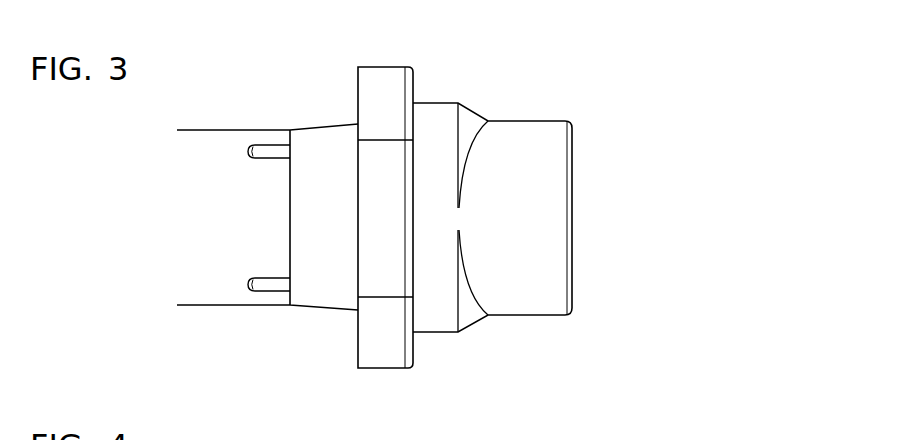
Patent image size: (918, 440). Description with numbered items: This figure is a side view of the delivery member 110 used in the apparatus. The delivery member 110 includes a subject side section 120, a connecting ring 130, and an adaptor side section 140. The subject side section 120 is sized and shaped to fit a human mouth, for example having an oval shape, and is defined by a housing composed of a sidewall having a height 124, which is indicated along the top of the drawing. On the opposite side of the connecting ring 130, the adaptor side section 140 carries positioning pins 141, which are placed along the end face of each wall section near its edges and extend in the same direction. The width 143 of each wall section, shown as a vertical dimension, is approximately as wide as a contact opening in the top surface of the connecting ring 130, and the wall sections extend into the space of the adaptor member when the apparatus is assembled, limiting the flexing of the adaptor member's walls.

The delivery member 110 is at (250, 138).
The subject side section 120 is at (566, 323).
The height 124 is at (413, 90).
The connecting ring 130 is at (417, 375).
The adaptor side section 140 is at (313, 313).
The positioning pins 141 is at (272, 281).
The width 143 is at (203, 130).